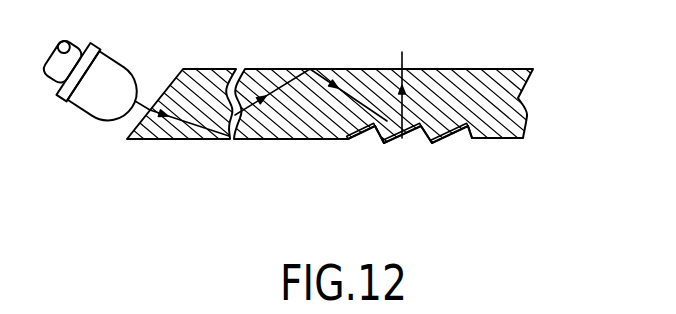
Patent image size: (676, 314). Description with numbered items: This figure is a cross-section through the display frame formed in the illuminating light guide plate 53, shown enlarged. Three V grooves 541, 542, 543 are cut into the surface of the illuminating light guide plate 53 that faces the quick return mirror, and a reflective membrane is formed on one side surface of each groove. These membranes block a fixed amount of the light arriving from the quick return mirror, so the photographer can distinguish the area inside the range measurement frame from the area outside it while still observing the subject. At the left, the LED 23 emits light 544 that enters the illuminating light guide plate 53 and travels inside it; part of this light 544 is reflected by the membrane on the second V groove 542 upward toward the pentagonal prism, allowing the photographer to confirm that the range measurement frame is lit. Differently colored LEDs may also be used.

The illuminating light guide plate 53 is at (445, 69).
The LED 23 is at (118, 67).
The light 544 is at (337, 70).
The V groove 541 is at (355, 149).
The V groove 542 is at (410, 151).
The V groove 543 is at (459, 154).